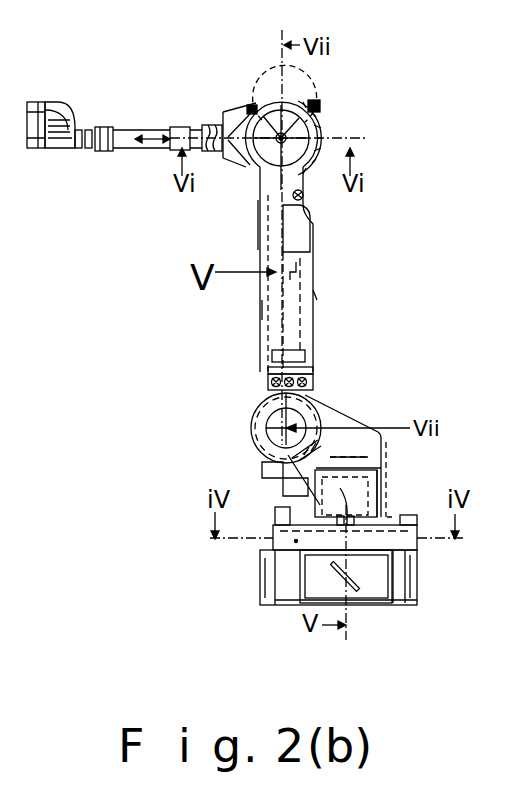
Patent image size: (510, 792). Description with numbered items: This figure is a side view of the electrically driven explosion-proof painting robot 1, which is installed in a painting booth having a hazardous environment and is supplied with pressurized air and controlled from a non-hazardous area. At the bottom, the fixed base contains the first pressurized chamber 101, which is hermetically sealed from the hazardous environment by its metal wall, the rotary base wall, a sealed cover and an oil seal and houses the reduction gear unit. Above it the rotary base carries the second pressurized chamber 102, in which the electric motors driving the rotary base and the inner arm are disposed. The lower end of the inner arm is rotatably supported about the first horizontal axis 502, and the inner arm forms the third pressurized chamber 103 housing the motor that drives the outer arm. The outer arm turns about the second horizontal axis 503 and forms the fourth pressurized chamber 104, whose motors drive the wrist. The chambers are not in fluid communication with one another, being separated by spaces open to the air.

The electrically driven explosion-proof painting robot 1 is at (326, 300).
The first pressurized chamber 101 is at (303, 572).
The second pressurized chamber 102 is at (311, 414).
The third pressurized chamber 103 is at (291, 117).
The fourth pressurized chamber 104 is at (327, 117).
The first horizontal axis 502 is at (257, 427).
The second horizontal axis 503 is at (252, 106).